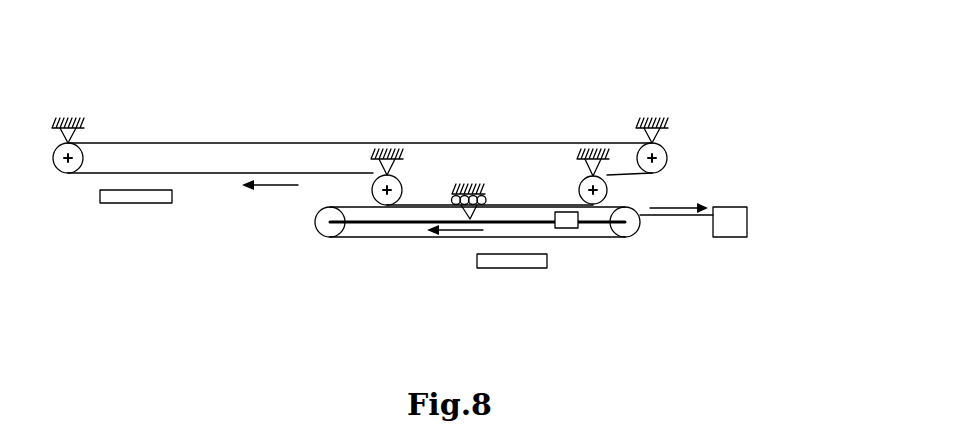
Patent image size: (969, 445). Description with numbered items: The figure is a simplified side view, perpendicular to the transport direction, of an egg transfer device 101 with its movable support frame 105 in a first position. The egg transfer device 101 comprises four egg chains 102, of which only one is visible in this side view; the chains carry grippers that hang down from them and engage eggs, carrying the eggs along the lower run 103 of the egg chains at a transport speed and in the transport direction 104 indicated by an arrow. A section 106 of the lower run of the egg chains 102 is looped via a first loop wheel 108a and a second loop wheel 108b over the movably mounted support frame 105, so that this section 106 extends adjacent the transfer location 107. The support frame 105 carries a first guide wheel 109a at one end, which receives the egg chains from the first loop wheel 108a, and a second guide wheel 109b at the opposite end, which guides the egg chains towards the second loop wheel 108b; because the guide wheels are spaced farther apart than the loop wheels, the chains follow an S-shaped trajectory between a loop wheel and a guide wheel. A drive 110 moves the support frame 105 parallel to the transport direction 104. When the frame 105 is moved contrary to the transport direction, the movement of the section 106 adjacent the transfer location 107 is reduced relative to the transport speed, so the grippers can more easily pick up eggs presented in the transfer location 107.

The egg transfer device 101 is at (681, 55).
The egg chain 102 is at (539, 143).
The lower run of the egg chains 103 is at (190, 301).
The transport direction 104 is at (275, 186).
The movable support frame 105 is at (380, 233).
The section of the egg chains 106 is at (585, 240).
The transfer location 107 is at (512, 250).
The first loop wheel 108a is at (665, 152).
The second loop wheel 108b is at (402, 184).
The first guide wheel 109a is at (628, 240).
The second guide wheel 109b is at (322, 210).
The drive 110 is at (730, 218).